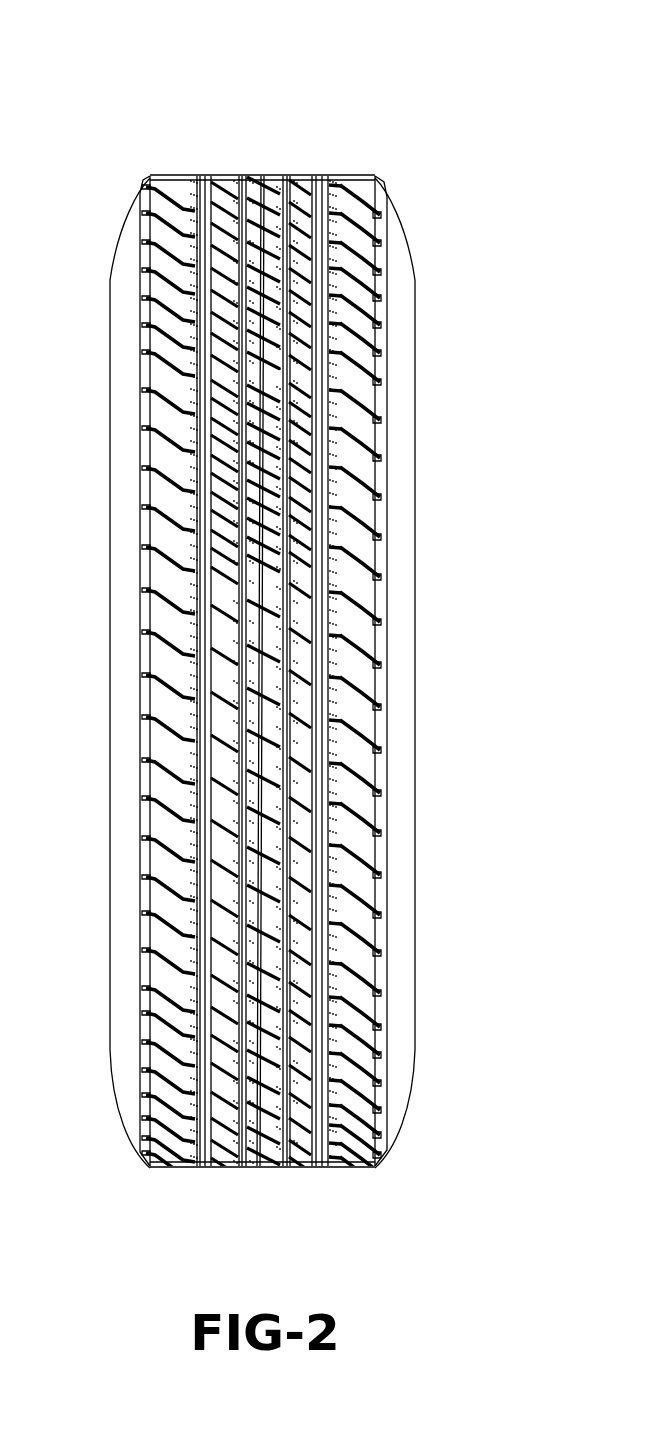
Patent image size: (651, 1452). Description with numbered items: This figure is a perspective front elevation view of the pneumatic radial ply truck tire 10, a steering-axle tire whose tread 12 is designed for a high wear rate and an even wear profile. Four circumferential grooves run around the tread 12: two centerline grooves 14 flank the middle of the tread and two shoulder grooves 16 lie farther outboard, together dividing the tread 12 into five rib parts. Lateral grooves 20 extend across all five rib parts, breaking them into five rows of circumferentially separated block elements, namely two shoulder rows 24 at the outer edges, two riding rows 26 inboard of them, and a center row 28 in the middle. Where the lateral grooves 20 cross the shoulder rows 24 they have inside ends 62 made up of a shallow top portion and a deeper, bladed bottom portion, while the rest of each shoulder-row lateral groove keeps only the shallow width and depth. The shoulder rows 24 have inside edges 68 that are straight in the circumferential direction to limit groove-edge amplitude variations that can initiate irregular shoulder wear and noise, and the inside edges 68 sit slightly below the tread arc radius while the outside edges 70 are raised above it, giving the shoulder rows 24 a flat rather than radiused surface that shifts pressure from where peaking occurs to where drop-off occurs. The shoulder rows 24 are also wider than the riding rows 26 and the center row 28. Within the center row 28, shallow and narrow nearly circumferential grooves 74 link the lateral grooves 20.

The pneumatic radial ply truck tire 10 is at (501, 91).
The tread 12 is at (159, 88).
The centerline grooves 14 is at (240, 1194).
The shoulder grooves 16 is at (198, 1194).
The lateral grooves 20 is at (253, 685).
The shoulder rows 24 is at (176, 162).
The riding rows 26 is at (216, 160).
The center row 28 is at (265, 159).
The inside ends 62 is at (330, 392).
The inside edges 68 is at (195, 452).
The outside edges 70 is at (150, 565).
The nearly circumferential grooves 74 is at (265, 845).